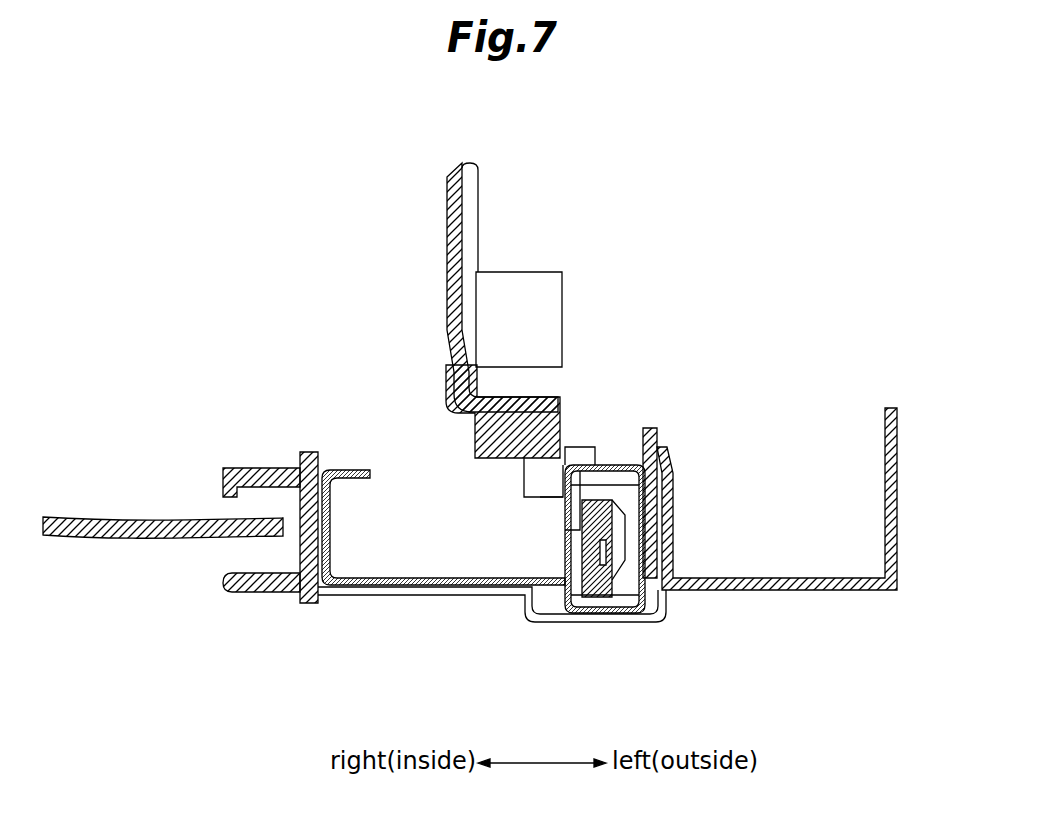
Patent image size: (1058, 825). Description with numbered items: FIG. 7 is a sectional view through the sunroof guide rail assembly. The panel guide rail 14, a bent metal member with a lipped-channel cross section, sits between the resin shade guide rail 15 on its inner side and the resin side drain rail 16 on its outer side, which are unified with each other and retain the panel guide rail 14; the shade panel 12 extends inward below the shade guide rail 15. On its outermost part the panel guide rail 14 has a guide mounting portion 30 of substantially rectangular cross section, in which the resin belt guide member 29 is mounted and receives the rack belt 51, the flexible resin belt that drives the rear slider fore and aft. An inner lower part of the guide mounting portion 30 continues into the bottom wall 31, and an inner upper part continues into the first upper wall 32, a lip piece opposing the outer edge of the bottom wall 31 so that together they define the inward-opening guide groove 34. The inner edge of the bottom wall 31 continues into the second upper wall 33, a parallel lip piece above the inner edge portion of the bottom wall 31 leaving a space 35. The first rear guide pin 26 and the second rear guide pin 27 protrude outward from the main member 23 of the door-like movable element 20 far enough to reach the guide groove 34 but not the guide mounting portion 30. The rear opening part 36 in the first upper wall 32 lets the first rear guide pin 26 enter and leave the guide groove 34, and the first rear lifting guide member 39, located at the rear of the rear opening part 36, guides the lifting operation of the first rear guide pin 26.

The shade panel 12 is at (108, 518).
The panel guide rail 14 is at (458, 596).
The shade guide rail 15 is at (257, 592).
The side drain rail 16 is at (898, 492).
The door 20 is at (455, 167).
The main member 23 is at (447, 207).
The first rear guide pin 26 is at (548, 398).
The second rear guide pin 27 is at (562, 300).
The belt guide member 29 is at (645, 560).
The guide mounting portion 30 is at (668, 490).
The bottom wall 31 is at (545, 600).
The first upper wall 32 is at (540, 490).
The second upper wall 33 is at (350, 470).
The guide groove 34 is at (544, 550).
The front opening part 35 is at (359, 547).
The rear opening part 36 is at (545, 498).
The first rear lifting guide member 39 is at (565, 448).
The rack belt 51 is at (618, 515).